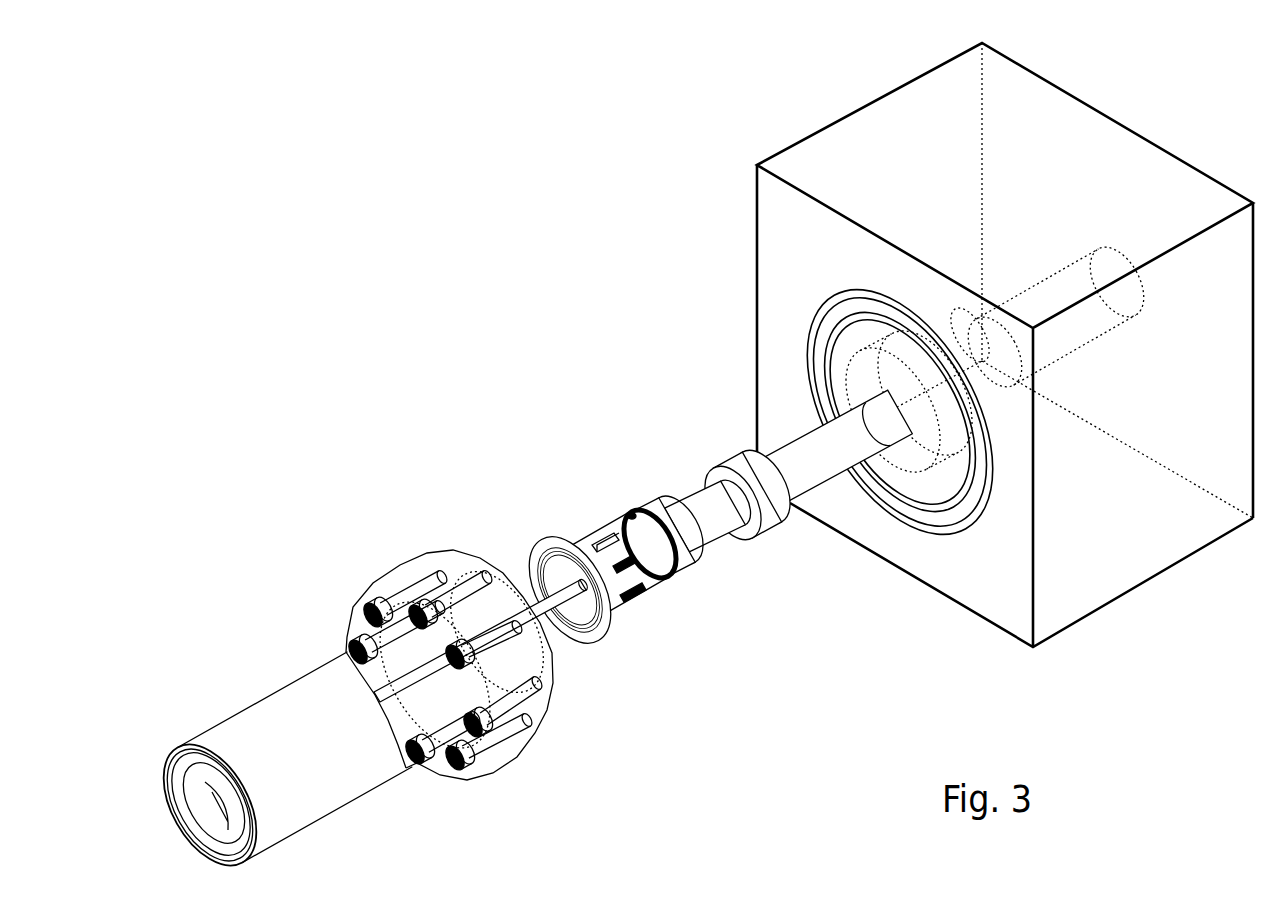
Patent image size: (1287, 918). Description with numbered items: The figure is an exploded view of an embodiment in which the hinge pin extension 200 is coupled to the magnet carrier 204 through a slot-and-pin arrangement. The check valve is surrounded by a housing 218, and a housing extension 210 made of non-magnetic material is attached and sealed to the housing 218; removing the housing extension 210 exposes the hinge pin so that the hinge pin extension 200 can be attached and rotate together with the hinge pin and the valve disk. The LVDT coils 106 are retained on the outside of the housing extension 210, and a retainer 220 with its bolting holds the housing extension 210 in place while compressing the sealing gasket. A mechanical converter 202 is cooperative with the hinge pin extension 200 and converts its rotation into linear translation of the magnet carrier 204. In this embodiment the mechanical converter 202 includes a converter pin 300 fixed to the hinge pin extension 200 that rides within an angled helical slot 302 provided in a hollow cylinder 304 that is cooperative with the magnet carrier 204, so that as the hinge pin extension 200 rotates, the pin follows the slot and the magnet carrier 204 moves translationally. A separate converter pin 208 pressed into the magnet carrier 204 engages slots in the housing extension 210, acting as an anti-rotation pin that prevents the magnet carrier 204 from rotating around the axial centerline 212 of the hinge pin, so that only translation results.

The LVDT coils 106 is at (267, 525).
The hinge pin extension 200 is at (720, 460).
The mechanical converter 202 is at (707, 642).
The magnet carrier 204 is at (563, 665).
The converter pin 208 is at (592, 537).
The housing extension 210 is at (533, 747).
The axial centerline 212 is at (463, 773).
The housing 218 is at (952, 200).
The retainer 220 is at (435, 777).
The converter pin 300 is at (632, 517).
The angled helical slot 302 is at (678, 578).
The hollow cylinder 304 is at (683, 590).